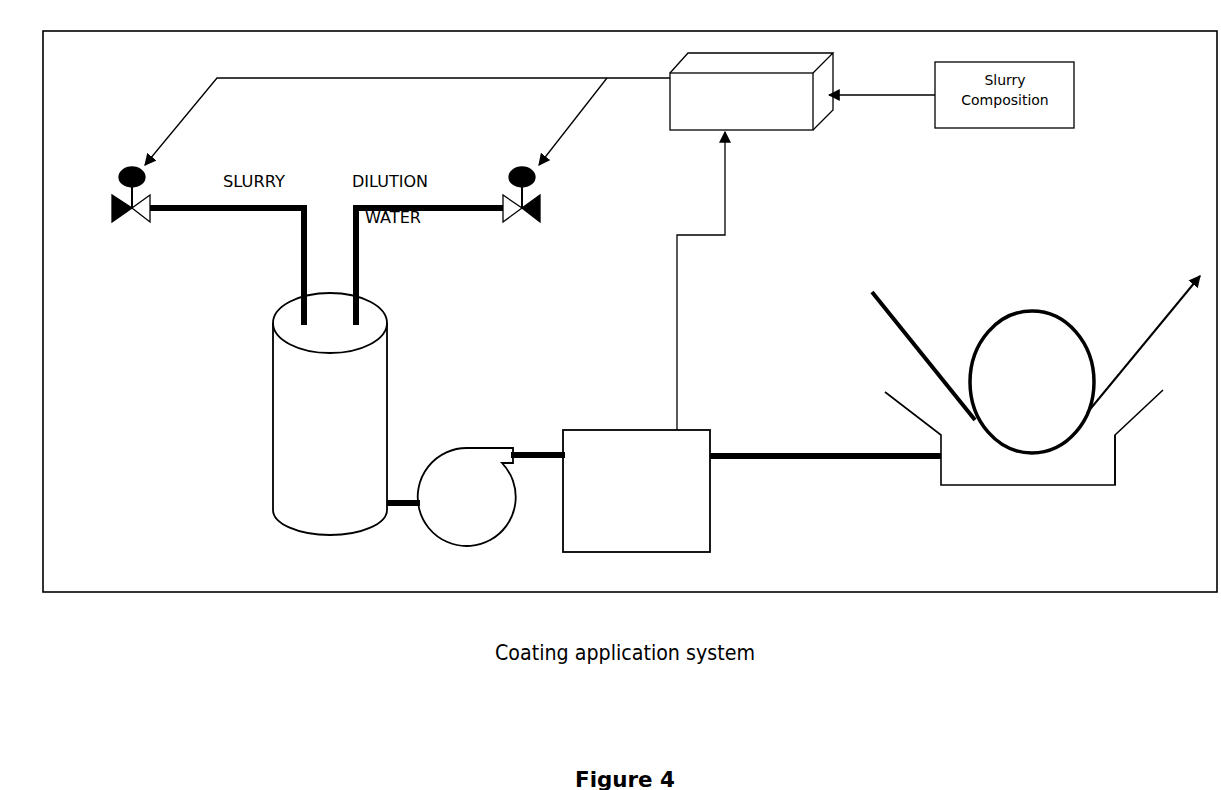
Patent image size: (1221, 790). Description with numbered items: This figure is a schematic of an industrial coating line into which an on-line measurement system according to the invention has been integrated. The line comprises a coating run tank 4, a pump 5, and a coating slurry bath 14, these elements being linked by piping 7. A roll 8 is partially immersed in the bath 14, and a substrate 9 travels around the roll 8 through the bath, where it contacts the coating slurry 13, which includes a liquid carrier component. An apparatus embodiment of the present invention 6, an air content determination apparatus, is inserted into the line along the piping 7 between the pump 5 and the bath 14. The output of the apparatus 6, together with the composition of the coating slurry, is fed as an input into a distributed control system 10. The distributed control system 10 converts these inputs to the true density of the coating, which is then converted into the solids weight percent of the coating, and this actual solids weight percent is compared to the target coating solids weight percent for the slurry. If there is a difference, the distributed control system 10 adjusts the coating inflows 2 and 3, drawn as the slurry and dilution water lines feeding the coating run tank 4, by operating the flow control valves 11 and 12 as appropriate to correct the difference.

The coating inflow 2 is at (244, 211).
The coating inflow 3 is at (477, 211).
The coating run tank 4 is at (330, 414).
The pump 5 is at (451, 497).
The apparatus embodiment of the present invention 6 is at (645, 430).
The piping 7 is at (786, 460).
The roll 8 is at (1085, 364).
The substrate 9 is at (878, 300).
The distributed control system 10 is at (489, 241).
The flow control valve 11 is at (125, 170).
The flow control valve 12 is at (510, 173).
The coating slurry 13 is at (1025, 470).
The coating slurry bath 14 is at (1117, 470).